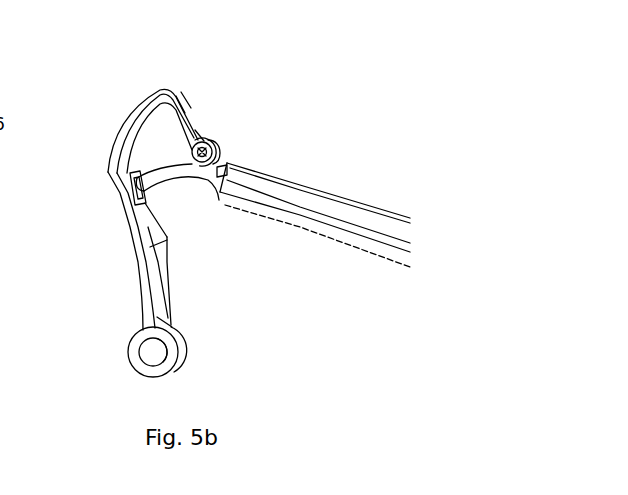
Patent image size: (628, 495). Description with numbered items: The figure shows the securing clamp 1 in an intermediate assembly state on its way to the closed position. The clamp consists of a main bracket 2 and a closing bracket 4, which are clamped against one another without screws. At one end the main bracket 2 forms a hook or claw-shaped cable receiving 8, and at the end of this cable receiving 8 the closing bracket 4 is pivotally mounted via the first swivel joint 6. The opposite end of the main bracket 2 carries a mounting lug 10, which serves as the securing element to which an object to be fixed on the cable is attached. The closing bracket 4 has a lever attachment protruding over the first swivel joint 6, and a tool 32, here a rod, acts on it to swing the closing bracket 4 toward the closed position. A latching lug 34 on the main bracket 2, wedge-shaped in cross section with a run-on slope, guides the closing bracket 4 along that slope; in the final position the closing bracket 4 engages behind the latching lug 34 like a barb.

The securing clamp 1 is at (375, 90).
The main bracket 2 is at (123, 163).
The closing bracket 4 is at (168, 181).
The first swivel joint 6 is at (207, 152).
The cable receiving 8 is at (150, 130).
The mounting lug 10 is at (151, 357).
The tool 32 is at (385, 235).
The latching lug 34 is at (136, 186).